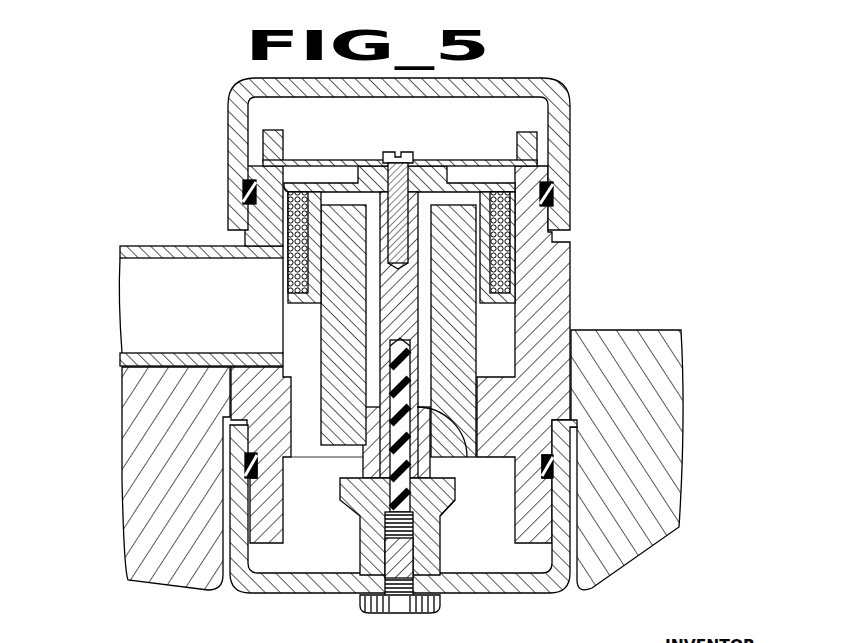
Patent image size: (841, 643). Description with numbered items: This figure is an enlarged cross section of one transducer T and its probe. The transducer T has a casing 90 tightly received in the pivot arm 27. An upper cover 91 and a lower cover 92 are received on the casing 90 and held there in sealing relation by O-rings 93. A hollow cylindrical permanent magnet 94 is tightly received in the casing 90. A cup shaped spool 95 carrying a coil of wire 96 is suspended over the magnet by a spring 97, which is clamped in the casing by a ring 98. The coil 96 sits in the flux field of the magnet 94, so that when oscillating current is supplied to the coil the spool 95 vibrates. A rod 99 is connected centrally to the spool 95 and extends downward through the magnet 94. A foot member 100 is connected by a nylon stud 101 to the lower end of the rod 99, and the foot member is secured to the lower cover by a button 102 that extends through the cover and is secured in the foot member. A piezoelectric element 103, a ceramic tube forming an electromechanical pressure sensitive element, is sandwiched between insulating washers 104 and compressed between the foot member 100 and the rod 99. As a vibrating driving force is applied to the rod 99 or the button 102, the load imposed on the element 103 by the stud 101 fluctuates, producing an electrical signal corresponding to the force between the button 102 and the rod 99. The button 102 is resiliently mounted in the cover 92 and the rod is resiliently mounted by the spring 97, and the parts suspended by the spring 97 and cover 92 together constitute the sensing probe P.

The pivot arm 27 is at (120, 248).
The casing 90 is at (565, 287).
The upper cover 91 is at (556, 92).
The lower cover 92 is at (243, 586).
The O-rings 93 is at (556, 191).
The permanent magnet 94 is at (321, 326).
The spool 95 is at (350, 185).
The coil of wire 96 is at (290, 268).
The spring 97 is at (479, 160).
The ring 98 is at (532, 152).
The rod 99 is at (415, 332).
The foot member 100 is at (455, 484).
The nylon stud 101 is at (410, 505).
The button 102 is at (436, 604).
The piezoelectric element 103 is at (380, 448).
The insulating washers 104 is at (408, 468).
The sensing probe P is at (362, 533).
The transducer T is at (574, 118).